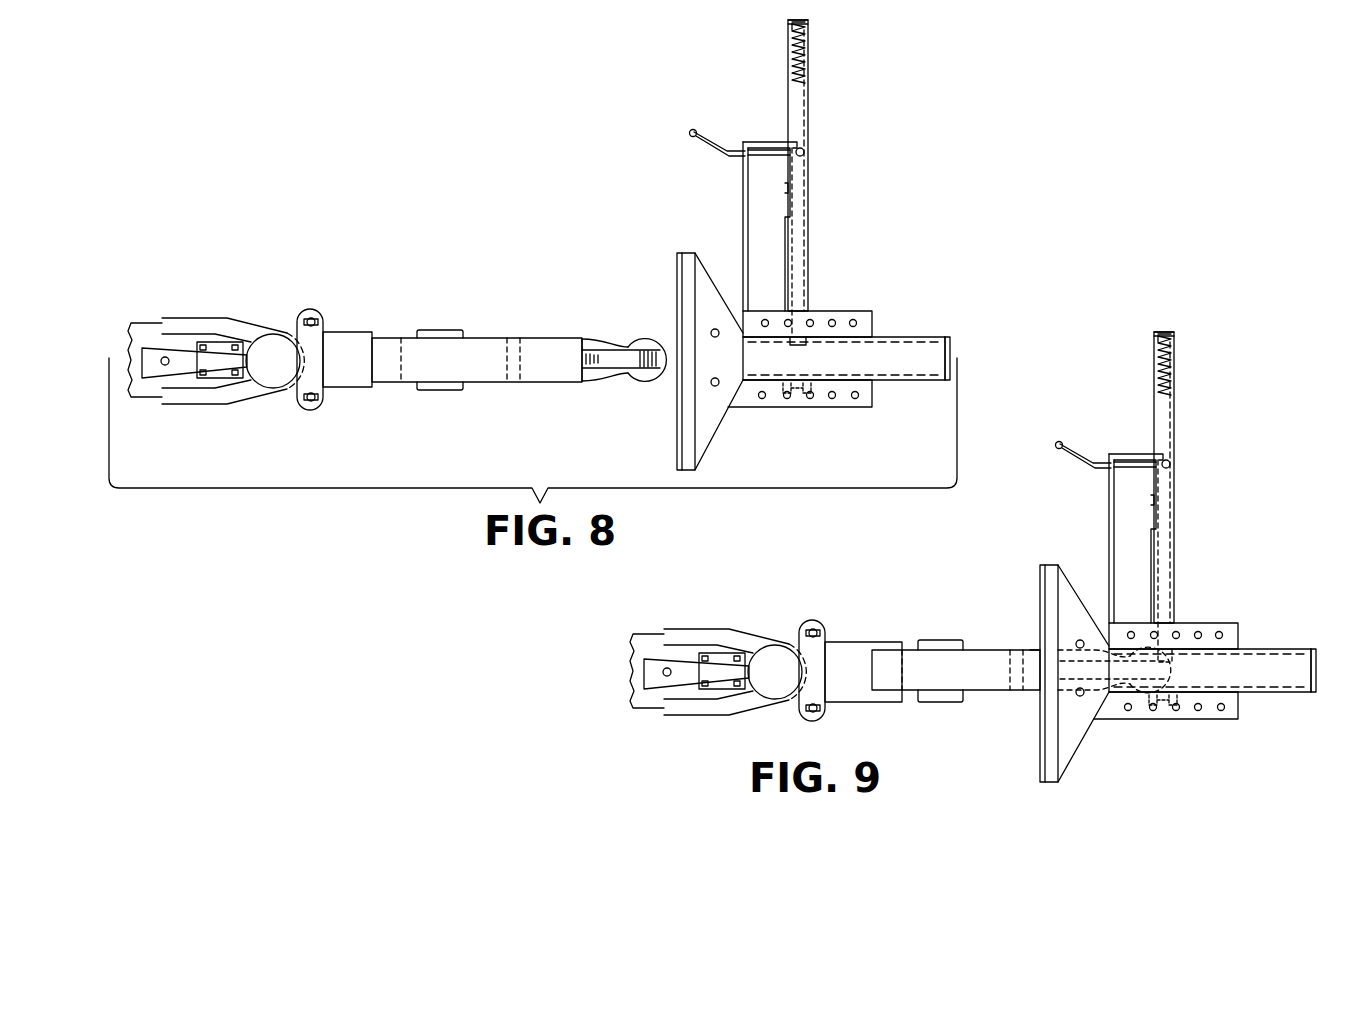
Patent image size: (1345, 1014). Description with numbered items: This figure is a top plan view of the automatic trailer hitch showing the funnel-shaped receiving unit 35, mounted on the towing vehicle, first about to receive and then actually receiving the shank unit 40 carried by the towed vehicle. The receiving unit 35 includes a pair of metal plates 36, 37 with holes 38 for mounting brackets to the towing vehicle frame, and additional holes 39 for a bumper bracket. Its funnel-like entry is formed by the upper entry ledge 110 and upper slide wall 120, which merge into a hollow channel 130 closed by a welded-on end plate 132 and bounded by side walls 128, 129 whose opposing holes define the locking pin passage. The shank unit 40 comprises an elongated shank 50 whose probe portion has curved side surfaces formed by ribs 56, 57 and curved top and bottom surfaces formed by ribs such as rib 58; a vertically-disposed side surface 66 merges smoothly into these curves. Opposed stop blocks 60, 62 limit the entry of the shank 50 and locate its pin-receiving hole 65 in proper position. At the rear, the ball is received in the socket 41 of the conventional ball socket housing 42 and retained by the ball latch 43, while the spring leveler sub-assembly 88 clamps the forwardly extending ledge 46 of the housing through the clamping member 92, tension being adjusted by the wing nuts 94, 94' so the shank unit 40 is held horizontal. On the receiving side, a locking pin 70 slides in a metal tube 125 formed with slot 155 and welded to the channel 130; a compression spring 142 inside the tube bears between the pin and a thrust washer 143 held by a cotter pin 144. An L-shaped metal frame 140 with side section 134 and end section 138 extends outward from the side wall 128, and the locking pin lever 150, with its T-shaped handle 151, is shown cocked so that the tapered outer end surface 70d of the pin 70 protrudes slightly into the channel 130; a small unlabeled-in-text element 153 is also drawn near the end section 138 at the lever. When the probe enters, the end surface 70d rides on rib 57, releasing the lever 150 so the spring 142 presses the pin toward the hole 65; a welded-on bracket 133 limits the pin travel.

In FIG. 8, the receiving unit 35 is at (866, 351).
In FIG. 9, the receiving unit 35 is at (1210, 650).
In FIG. 8, the metal plate 36 is at (840, 312).
In FIG. 9, the metal plate 36 is at (1173, 615).
In FIG. 8, the metal plate 37 is at (846, 400).
In FIG. 9, the metal plate 37 is at (1197, 709).
In FIG. 8, the holes 38 is at (856, 322).
In FIG. 9, the holes 38 is at (1192, 661).
In FIG. 8, the additional holes 39 is at (713, 337).
In FIG. 9, the additional holes 39 is at (1090, 630).
In FIG. 8, the shank unit 40 is at (519, 344).
In FIG. 9, the shank unit 40 is at (1039, 672).
In FIG. 8, the socket 41 is at (272, 342).
In FIG. 9, the socket 41 is at (774, 655).
In FIG. 8, the ball socket housing 42 is at (140, 392).
In FIG. 9, the ball socket housing 42 is at (643, 652).
In FIG. 8, the ball latch 43 is at (218, 358).
In FIG. 9, the ball latch 43 is at (681, 670).
In FIG. 8, the ledge 46 is at (293, 388).
In FIG. 9, the ledge 46 is at (793, 700).
In FIG. 8, the shank 50 is at (546, 378).
In FIG. 9, the shank 50 is at (973, 657).
In FIG. 8, the rib 56 is at (638, 378).
In FIG. 9, the rib 56 is at (1150, 670).
In FIG. 8, the rib 57 is at (640, 345).
In FIG. 9, the rib 57 is at (1094, 670).
In FIG. 8, the rib 58 is at (628, 356).
In FIG. 9, the rib 58 is at (1166, 672).
In FIG. 8, the stop block 60 is at (455, 390).
In FIG. 9, the stop block 60 is at (945, 703).
In FIG. 8, the stop block 62 is at (450, 330).
In FIG. 9, the stop block 62 is at (945, 645).
In FIG. 8, the pin-receiving hole 65 is at (507, 338).
In FIG. 9, the pin-receiving hole 65 is at (1011, 655).
In FIG. 8, the side surface 66 is at (553, 337).
In FIG. 9, the side surface 66 is at (1031, 650).
In FIG. 8, the locking pin 70 is at (788, 176).
In FIG. 9, the locking pin 70 is at (1157, 497).
In FIG. 9, the outer end surface of locking pin 70d is at (1174, 658).
In FIG. 8, the spring leveler sub-assembly 88 is at (334, 348).
In FIG. 9, the spring leveler sub-assembly 88 is at (835, 686).
In FIG. 8, the clamping member 92 is at (318, 370).
In FIG. 9, the clamping member 92 is at (822, 666).
In FIG. 8, the wing nut 94 is at (310, 415).
In FIG. 9, the wing nut 94 is at (818, 726).
In FIG. 8, the wing nut 94' is at (302, 305).
In FIG. 9, the wing nut 94' is at (839, 618).
In FIG. 8, the upper entry ledge 110 is at (680, 271).
In FIG. 9, the upper entry ledge 110 is at (1050, 715).
In FIG. 8, the upper slide wall 120 is at (690, 298).
In FIG. 9, the upper slide wall 120 is at (1072, 727).
In FIG. 8, the metal tube 125 is at (810, 124).
In FIG. 9, the metal tube 125 is at (1164, 477).
In FIG. 8, the side wall 128 is at (908, 338).
In FIG. 9, the side wall 128 is at (1210, 643).
In FIG. 8, the side wall 129 is at (895, 385).
In FIG. 9, the side wall 129 is at (1306, 701).
In FIG. 8, the hollow channel 130 is at (885, 392).
In FIG. 9, the hollow channel 130 is at (1210, 670).
In FIG. 8, the end plate 132 is at (952, 343).
In FIG. 9, the end plate 132 is at (1304, 650).
In FIG. 8, the bracket 133 is at (786, 398).
In FIG. 9, the bracket 133 is at (1175, 724).
In FIG. 8, the side section 134 is at (742, 258).
In FIG. 9, the side section 134 is at (1113, 538).
In FIG. 8, the end section 138 is at (765, 140).
In FIG. 9, the end section 138 is at (1137, 453).
In FIG. 8, the L-shaped metal frame 140 is at (755, 212).
In FIG. 9, the L-shaped metal frame 140 is at (1118, 541).
In FIG. 8, the compression spring 142 is at (810, 72).
In FIG. 9, the compression spring 142 is at (1172, 377).
In FIG. 8, the thrust washer 143 is at (793, 30).
In FIG. 9, the thrust washer 143 is at (1157, 340).
In FIG. 8, the cotter pin 144 is at (812, 23).
In FIG. 9, the cotter pin 144 is at (1168, 336).
In FIG. 8, the locking pin lever 150 is at (718, 148).
In FIG. 9, the locking pin lever 150 is at (1088, 453).
In FIG. 8, the T-shaped handle 151 is at (690, 131).
In FIG. 9, the T-shaped handle 151 is at (1056, 446).
In FIG. 8, the pivot pin 153 is at (805, 152).
In FIG. 9, the pivot pin 153 is at (1172, 463).
In FIG. 8, the slot 155 is at (793, 186).
In FIG. 9, the slot 155 is at (1163, 508).